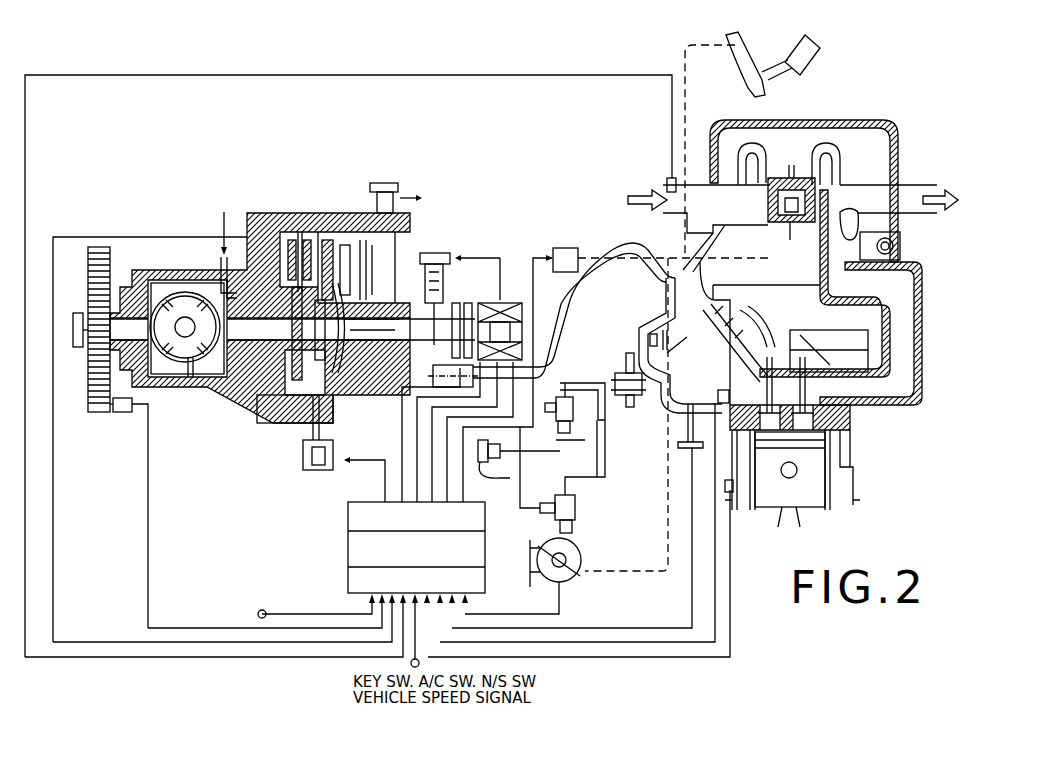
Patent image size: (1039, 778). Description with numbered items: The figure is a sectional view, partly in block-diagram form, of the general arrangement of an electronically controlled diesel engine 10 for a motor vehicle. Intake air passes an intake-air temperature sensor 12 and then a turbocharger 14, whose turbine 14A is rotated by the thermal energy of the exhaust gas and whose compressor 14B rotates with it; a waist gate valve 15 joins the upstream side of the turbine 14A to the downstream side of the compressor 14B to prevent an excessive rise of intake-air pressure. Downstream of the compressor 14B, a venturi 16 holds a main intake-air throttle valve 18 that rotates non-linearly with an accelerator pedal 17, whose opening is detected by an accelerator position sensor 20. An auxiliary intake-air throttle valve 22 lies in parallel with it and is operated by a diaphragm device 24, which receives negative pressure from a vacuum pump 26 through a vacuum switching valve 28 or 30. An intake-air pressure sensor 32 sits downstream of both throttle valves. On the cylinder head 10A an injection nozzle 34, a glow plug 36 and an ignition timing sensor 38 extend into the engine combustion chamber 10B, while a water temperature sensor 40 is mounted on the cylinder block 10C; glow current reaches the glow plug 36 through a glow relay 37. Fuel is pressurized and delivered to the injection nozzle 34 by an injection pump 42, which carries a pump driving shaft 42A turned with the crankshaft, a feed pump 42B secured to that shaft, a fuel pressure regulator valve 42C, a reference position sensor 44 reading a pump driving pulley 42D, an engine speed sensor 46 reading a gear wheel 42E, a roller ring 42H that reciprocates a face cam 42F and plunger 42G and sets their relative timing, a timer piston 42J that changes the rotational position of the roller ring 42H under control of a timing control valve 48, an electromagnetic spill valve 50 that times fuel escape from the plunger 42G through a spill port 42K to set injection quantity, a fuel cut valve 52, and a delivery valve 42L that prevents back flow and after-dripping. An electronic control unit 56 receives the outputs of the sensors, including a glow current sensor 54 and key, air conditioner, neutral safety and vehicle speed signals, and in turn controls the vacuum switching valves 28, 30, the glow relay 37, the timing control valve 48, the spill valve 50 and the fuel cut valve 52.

The diesel engine 10 is at (860, 479).
The cylinder head 10A is at (812, 322).
The engine combustion chamber 10B is at (852, 428).
The cylinder block 10C is at (850, 452).
The intake-air temperature sensor 12 is at (666, 182).
The turbocharger 14 is at (777, 228).
The turbine 14A is at (842, 165).
The compressor 14B is at (768, 165).
The waist gate valve 15 is at (901, 248).
The venturi 16 is at (655, 318).
The accelerator pedal 17 is at (735, 72).
The main intake-air throttle valve 18 is at (676, 345).
The accelerator position sensor 20 is at (582, 555).
The auxiliary intake-air throttle valve 22 is at (648, 338).
The diaphragm device 24 is at (622, 362).
The vacuum pump 26 is at (505, 478).
The vacuum switching valve 28 is at (572, 395).
The vacuum switching valve 30 is at (576, 506).
The intake-air pressure sensor 32 is at (692, 452).
The injection nozzle 34 is at (738, 342).
The glow plug 36 is at (812, 338).
The glow relay 37 is at (581, 250).
The ignition timing sensor 38 is at (717, 395).
The water temperature sensor 40 is at (734, 494).
The injection pump 42 is at (302, 208).
The pump driving shaft 42A is at (78, 347).
The feed pump 42B is at (215, 395).
The fuel pressure regulator valve 42C is at (262, 272).
The pump driving pulley 42D is at (108, 268).
The gear wheel 42E is at (272, 424).
The face cam 42F is at (338, 300).
The plunger 42G is at (366, 330).
The roller ring 42H is at (318, 300).
The timer piston 42J is at (304, 420).
The spill port 42K is at (462, 303).
The delivery valve 42L is at (433, 380).
The reference position sensor 44 is at (124, 413).
The engine speed sensor 46 is at (327, 243).
The timing control valve 48 is at (315, 471).
The electromagnetic spill valve 50 is at (505, 300).
The fuel cut valve 52 is at (437, 252).
The glow current sensor 54 is at (264, 610).
The electronic control unit 56 is at (348, 547).